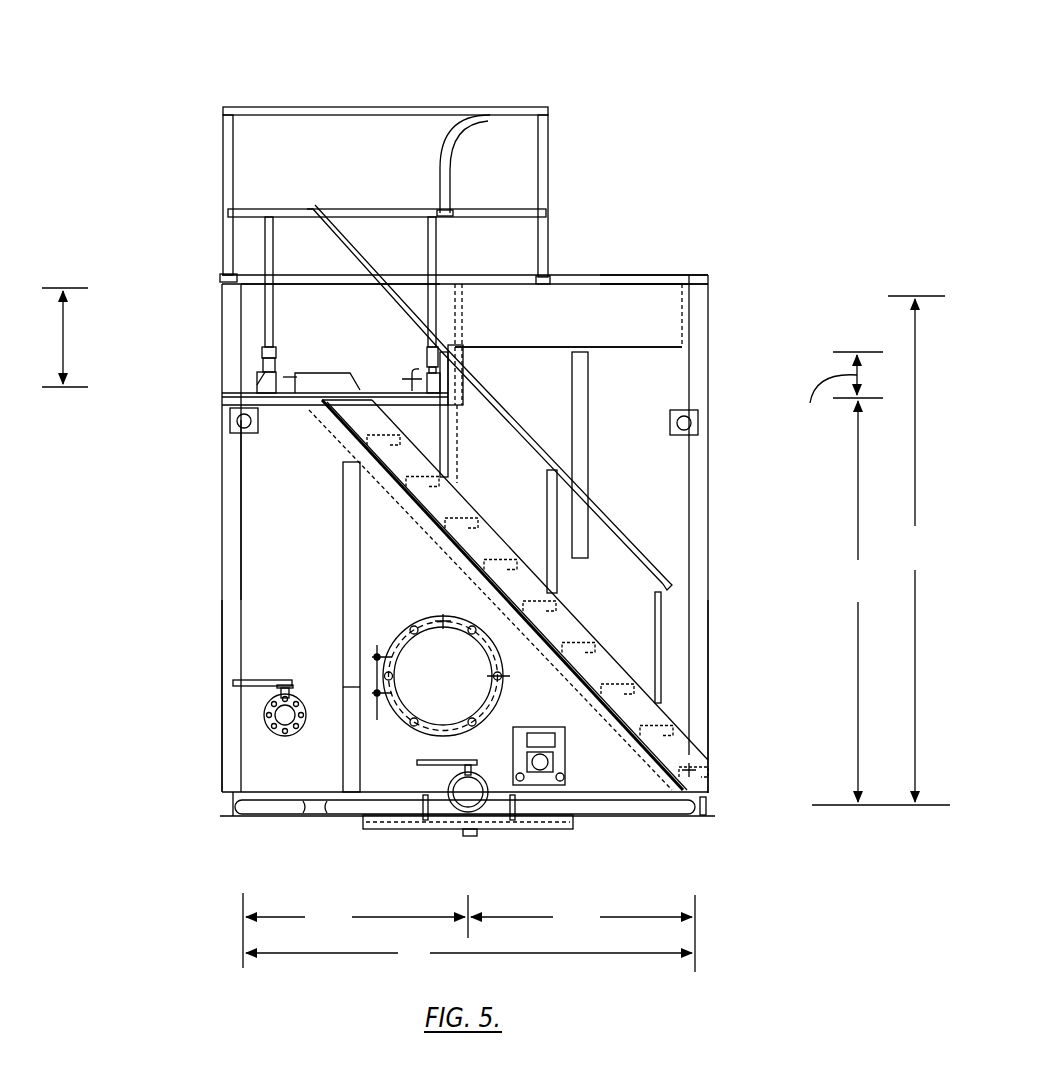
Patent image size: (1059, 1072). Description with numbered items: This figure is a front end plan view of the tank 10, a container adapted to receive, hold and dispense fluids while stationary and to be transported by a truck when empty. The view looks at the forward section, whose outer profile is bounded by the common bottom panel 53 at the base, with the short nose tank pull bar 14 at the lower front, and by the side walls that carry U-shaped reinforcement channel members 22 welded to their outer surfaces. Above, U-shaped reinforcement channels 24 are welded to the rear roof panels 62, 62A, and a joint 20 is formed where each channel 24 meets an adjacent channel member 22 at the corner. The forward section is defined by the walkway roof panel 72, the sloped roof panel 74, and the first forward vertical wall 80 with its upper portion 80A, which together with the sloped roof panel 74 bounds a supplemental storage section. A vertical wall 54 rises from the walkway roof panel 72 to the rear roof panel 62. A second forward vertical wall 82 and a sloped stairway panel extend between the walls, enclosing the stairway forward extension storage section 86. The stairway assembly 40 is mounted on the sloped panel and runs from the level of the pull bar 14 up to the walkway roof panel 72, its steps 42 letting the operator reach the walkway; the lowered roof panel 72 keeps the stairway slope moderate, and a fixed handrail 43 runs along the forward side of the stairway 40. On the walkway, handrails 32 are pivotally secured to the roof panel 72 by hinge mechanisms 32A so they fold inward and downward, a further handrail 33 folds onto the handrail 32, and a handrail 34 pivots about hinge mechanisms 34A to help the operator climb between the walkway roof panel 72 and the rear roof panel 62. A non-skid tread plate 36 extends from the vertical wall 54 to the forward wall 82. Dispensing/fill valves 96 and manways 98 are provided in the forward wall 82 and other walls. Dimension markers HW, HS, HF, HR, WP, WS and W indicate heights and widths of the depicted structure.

The tank 10 is at (627, 60).
The short nose tank pull bar 14 is at (250, 803).
The joint 20 is at (714, 288).
The U-shaped reinforcement channel members 22 is at (231, 737).
The U-shaped reinforcement channels 24 is at (680, 277).
The handrails 32 is at (268, 257).
The hinge mechanisms 32A is at (267, 343).
The further handrail 33 is at (355, 245).
The handrail 34 is at (413, 108).
The hinge mechanisms 34A is at (557, 278).
The tread plate 36 is at (377, 388).
The stairway assembly 40 is at (612, 505).
The steps 42 is at (588, 642).
The fixed handrail 43 is at (517, 428).
The bottom panel 53 is at (302, 807).
The vertical wall 54 is at (297, 307).
The rear roof panel 62 is at (637, 280).
The rear roof panel 62A is at (615, 290).
The walkway roof panel 72 is at (247, 389).
The sloped roof panel 74 is at (663, 318).
The first forward vertical wall 80 is at (675, 535).
The upper portion of forward wall 80A is at (642, 370).
The second forward vertical wall 82 is at (288, 578).
The stairway forward extension storage section 86 is at (208, 540).
The dispensing/fill valves 96 is at (470, 790).
The manways 98 is at (430, 647).
The wall height dimension HW is at (65, 337).
The stair height dimension HS is at (841, 399).
The floor height dimension HF is at (881, 603).
The rail height dimension HR is at (916, 549).
The pump width dimension WP is at (355, 930).
The stair width dimension WS is at (583, 933).
The overall width dimension W is at (469, 953).